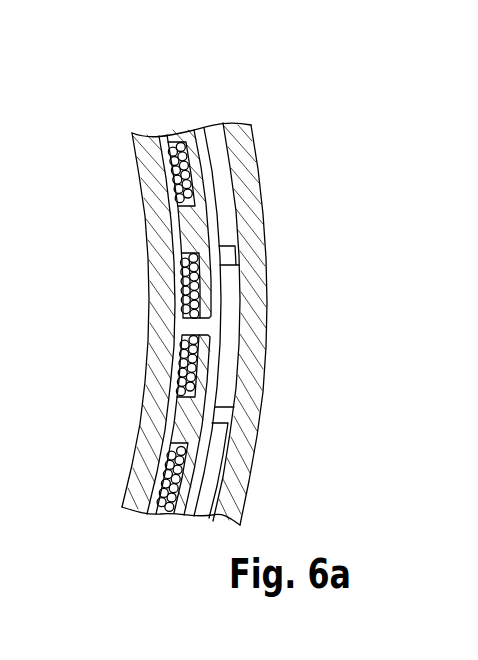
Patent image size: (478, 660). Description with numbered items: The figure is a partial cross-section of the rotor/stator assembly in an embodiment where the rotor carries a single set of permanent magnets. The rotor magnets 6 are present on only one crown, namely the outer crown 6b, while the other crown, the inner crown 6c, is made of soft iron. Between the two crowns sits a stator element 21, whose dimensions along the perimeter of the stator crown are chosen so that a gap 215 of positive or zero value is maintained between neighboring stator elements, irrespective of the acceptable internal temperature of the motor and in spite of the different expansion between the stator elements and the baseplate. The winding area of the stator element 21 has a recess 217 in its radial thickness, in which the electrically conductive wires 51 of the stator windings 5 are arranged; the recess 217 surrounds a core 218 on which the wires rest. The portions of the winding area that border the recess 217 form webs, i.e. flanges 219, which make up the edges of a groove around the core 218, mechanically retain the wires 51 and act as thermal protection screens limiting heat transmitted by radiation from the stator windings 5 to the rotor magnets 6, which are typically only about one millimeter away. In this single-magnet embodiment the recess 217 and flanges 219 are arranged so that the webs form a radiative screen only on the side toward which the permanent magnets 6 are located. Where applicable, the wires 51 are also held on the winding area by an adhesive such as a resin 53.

The rotor magnets 6 is at (232, 280).
The outer crown 6b is at (235, 117).
The inner crown 6c is at (148, 127).
The stator windings 5 is at (178, 285).
The resin 53 is at (170, 160).
The electrically conductive wires 51 is at (183, 352).
The stator element 21 is at (214, 368).
The gap 215 is at (204, 326).
The recess 217 is at (168, 512).
The core 218 is at (190, 427).
The flanges 219 is at (190, 483).